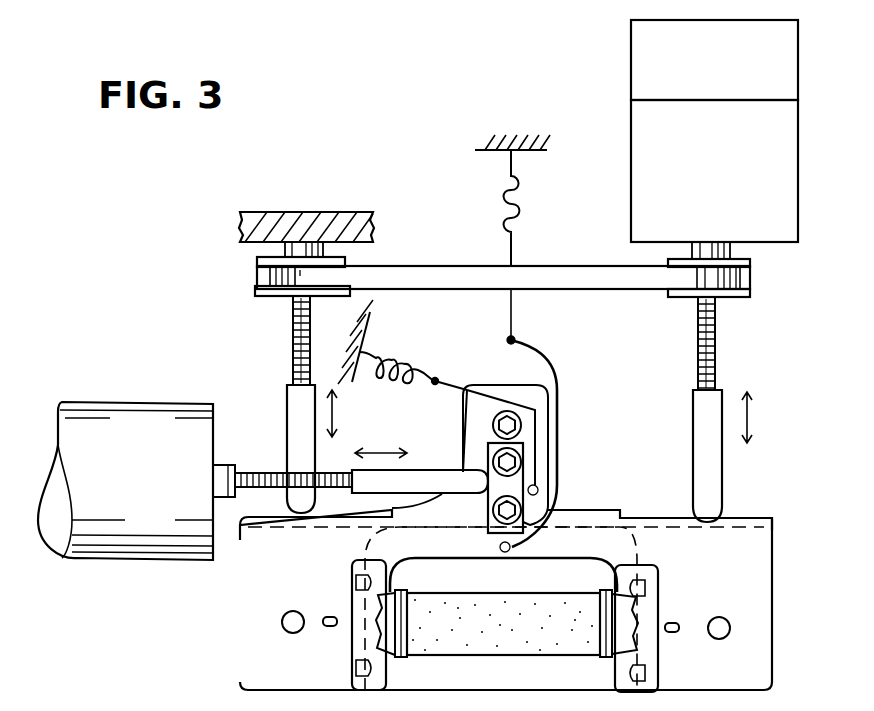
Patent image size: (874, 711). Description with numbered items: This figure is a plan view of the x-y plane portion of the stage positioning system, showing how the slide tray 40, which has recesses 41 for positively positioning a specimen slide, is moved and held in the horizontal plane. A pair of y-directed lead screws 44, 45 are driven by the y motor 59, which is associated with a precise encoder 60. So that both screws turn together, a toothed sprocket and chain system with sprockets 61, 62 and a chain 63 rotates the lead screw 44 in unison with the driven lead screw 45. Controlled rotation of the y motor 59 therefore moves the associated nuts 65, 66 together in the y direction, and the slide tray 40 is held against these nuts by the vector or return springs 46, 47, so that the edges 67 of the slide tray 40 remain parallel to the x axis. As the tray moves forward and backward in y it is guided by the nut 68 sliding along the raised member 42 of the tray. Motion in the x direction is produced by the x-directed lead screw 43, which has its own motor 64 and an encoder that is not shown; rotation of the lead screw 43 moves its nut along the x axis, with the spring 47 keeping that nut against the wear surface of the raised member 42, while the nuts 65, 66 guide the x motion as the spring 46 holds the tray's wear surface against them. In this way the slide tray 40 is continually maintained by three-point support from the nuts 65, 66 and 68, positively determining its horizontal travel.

The slide tray 40 is at (772, 578).
The recesses 41 is at (380, 668).
The raised member 42 is at (523, 522).
The x-directed lead screw 43 is at (268, 470).
The y-directed lead screw 44 is at (293, 335).
The y-directed lead screw 45 is at (698, 345).
The vector spring 46 is at (520, 200).
The vector spring 47 is at (383, 355).
The motor 59 is at (785, 123).
The encoder 60 is at (788, 73).
The sprocket 61 is at (752, 293).
The sprocket 62 is at (345, 262).
The chain 63 is at (452, 265).
The motor 64 is at (110, 400).
The nut 65 is at (285, 440).
The nut 66 is at (722, 475).
The edges 67 is at (240, 525).
The nut 68 is at (442, 468).